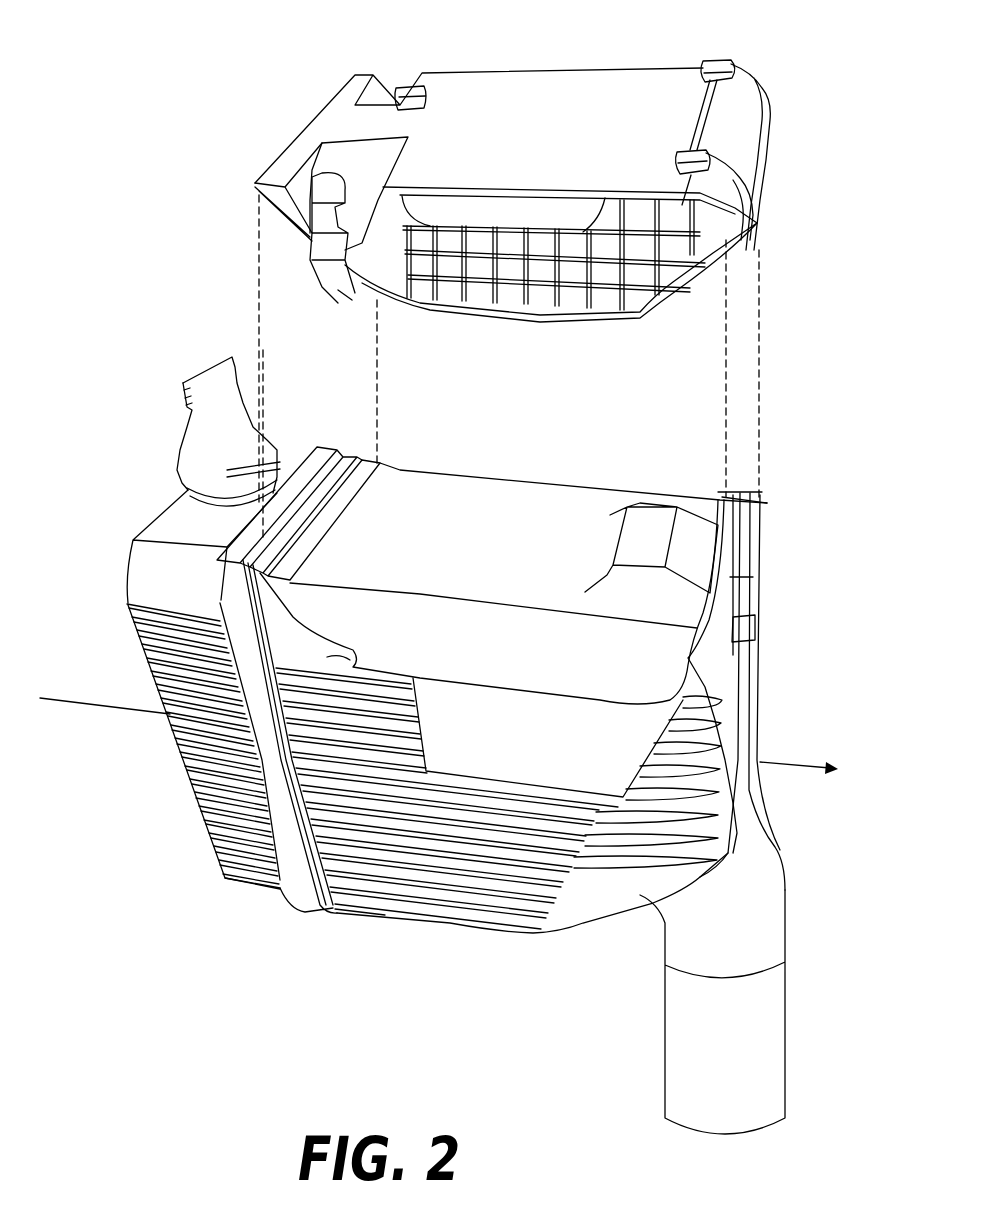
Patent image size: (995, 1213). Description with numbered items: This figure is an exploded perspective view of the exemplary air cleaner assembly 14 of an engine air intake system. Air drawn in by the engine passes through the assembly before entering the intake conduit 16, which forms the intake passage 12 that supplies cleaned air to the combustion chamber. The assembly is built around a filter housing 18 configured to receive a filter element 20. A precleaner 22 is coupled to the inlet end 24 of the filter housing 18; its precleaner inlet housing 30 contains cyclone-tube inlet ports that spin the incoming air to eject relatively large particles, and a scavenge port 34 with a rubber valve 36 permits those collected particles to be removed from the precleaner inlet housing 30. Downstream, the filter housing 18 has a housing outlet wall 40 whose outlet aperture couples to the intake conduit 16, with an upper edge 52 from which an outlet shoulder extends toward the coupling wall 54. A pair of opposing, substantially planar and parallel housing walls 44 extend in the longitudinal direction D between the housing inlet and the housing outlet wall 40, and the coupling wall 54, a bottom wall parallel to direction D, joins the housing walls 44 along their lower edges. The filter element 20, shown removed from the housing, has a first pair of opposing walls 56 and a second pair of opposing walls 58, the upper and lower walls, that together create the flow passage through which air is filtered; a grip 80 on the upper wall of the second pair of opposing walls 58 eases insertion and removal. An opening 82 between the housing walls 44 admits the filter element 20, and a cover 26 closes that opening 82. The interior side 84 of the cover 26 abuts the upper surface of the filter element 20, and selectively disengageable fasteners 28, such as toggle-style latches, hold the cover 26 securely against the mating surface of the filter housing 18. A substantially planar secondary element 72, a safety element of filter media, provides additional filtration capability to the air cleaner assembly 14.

The intake passage 12 is at (650, 1048).
The air cleaner assembly 14 is at (128, 196).
The intake conduit 16 is at (773, 1023).
The filter housing 18 is at (508, 756).
The filter element 20 is at (516, 556).
The precleaner 22 is at (124, 545).
The inlet end 24 is at (396, 458).
The cover 26 is at (567, 141).
The fasteners 28 is at (412, 84).
The precleaner inlet housing 30 is at (140, 580).
The scavenge port 34 is at (187, 500).
The valve 36 is at (210, 383).
The housing outlet wall 40 is at (753, 697).
The housing walls 44 is at (313, 627).
The upper edge 52 is at (763, 527).
The coupling wall 54 is at (487, 930).
The first pair of opposing walls 56 is at (541, 666).
The second pair of opposing walls 58 is at (563, 497).
The secondary element 72 is at (748, 573).
The grip 80 is at (650, 517).
The opening 82 is at (502, 458).
The interior side 84 is at (560, 326).
The longitudinal direction D is at (812, 771).